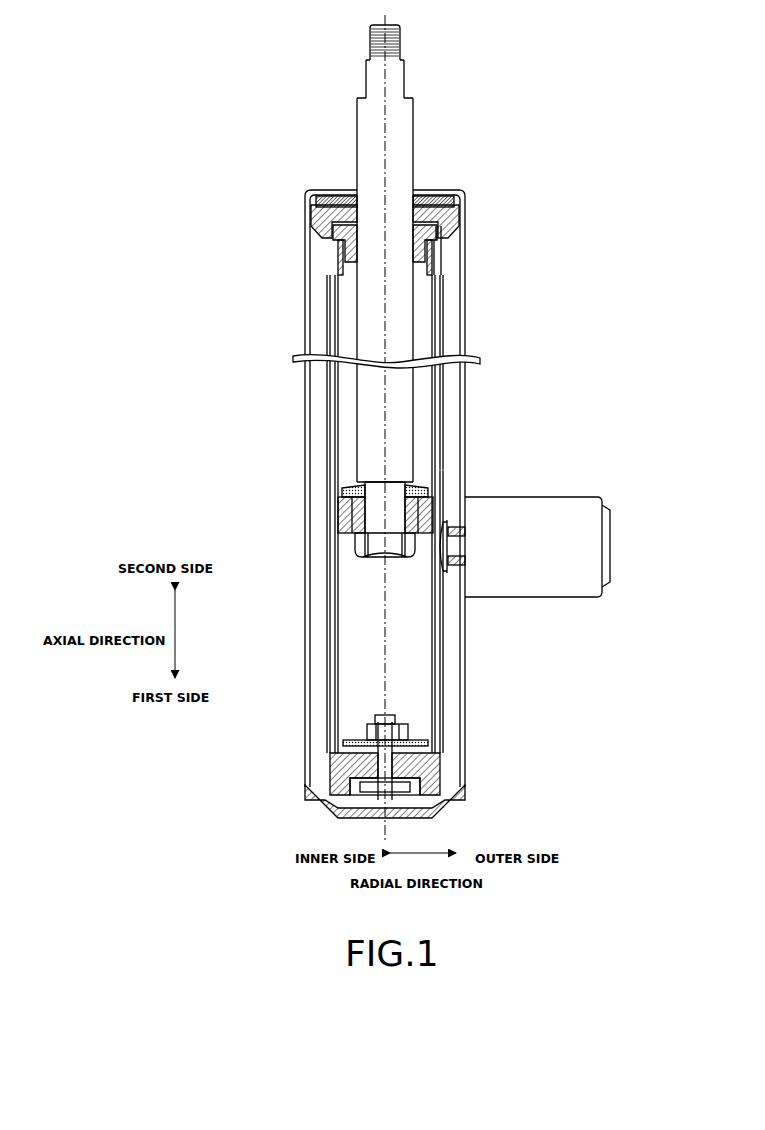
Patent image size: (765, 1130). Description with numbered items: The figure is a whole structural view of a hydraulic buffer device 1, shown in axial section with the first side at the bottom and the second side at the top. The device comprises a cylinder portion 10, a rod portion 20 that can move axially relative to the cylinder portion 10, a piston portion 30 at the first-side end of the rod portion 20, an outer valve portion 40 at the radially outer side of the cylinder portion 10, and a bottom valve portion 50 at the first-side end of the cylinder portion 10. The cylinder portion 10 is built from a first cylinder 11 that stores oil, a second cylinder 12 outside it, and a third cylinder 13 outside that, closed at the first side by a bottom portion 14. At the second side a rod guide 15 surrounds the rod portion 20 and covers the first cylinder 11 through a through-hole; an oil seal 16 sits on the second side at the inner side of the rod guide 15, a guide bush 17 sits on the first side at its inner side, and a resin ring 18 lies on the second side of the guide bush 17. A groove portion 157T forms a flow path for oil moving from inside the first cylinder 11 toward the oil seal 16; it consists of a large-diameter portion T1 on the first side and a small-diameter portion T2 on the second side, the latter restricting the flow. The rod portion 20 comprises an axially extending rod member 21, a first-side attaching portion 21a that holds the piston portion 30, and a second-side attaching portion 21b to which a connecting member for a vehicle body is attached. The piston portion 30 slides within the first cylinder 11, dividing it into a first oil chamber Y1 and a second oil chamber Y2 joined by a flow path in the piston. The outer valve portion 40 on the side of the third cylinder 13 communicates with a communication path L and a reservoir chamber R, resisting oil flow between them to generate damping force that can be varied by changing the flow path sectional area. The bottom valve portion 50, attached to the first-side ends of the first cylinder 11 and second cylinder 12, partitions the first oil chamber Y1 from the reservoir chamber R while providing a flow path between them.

The hydraulic buffer device 1 is at (243, 120).
The cylinder portion 10 is at (284, 202).
The first cylinder 11 is at (437, 403).
The second cylinder 12 is at (445, 379).
The third cylinder 13 is at (467, 338).
The bottom portion 14 is at (456, 812).
The rod guide 15 is at (455, 212).
The oil seal 16 is at (466, 196).
The guide bush 17 is at (340, 268).
The resin ring 18 is at (331, 228).
The rod portion 20 is at (416, 148).
The rod member 21 is at (357, 392).
The first-side attaching portion 21a is at (355, 517).
The second-side attaching portion 21b is at (401, 48).
The piston portion 30 is at (338, 488).
The outer valve portion 40 is at (576, 494).
The bottom valve portion 50 is at (343, 740).
The large-diameter portion T1 is at (435, 265).
The small-diameter portion T2 is at (438, 233).
The groove portion 157T is at (505, 241).
The reservoir chamber R is at (455, 440).
The communication path L is at (441, 468).
The first oil chamber Y1 is at (418, 608).
The second oil chamber Y2 is at (340, 318).